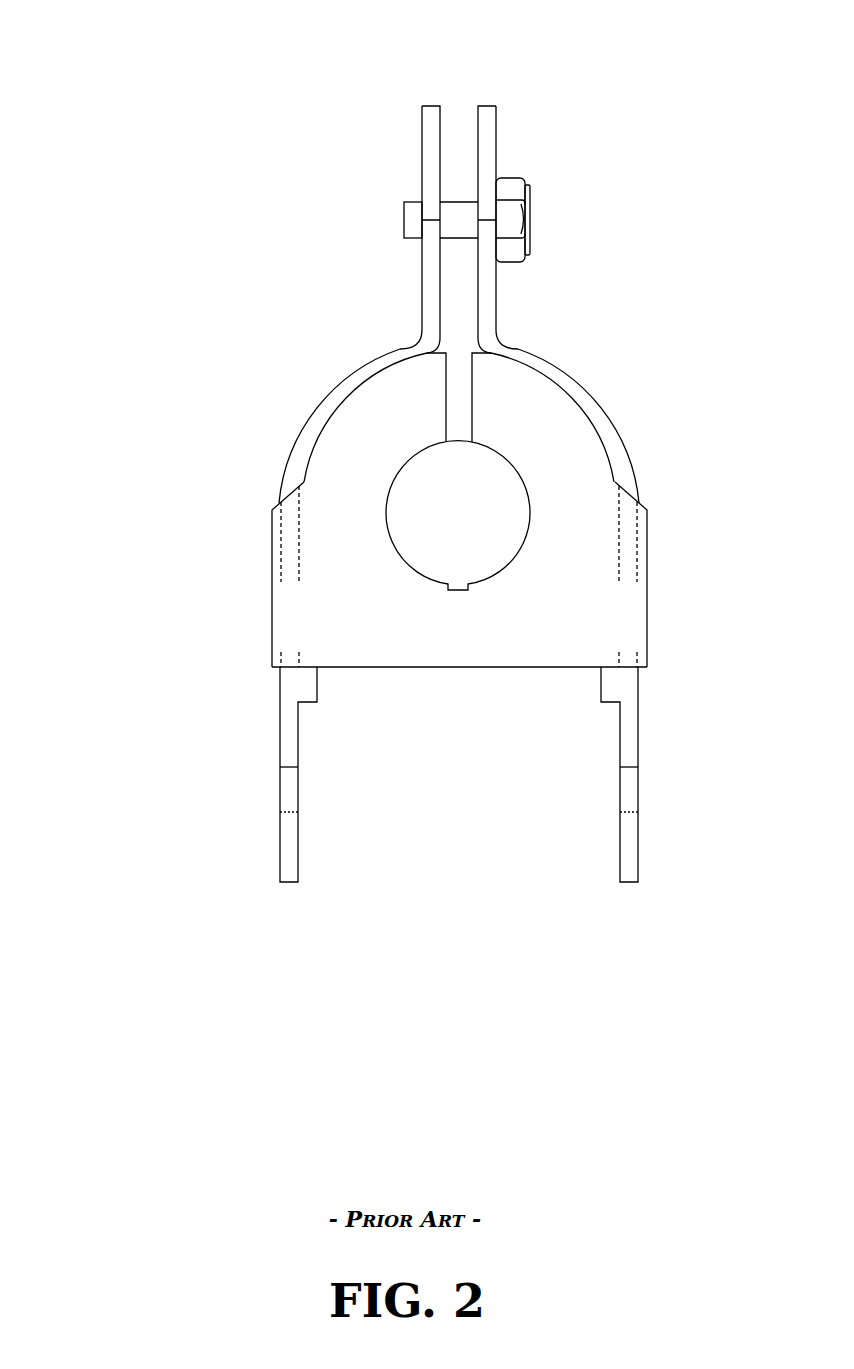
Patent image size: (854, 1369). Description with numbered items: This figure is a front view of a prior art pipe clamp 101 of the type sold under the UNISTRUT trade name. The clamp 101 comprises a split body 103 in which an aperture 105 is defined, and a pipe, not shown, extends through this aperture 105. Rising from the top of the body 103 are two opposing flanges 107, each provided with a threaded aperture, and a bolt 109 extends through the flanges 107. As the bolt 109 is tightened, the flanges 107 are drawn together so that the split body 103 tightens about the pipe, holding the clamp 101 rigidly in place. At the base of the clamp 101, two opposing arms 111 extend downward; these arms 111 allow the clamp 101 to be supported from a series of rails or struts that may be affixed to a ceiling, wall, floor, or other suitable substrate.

The clamp 101 is at (163, 47).
The split body 103 is at (388, 630).
The aperture 105 is at (515, 553).
The opposing flanges 107 is at (496, 128).
The bolt 109 is at (530, 220).
The opposing arms 111 is at (280, 858).